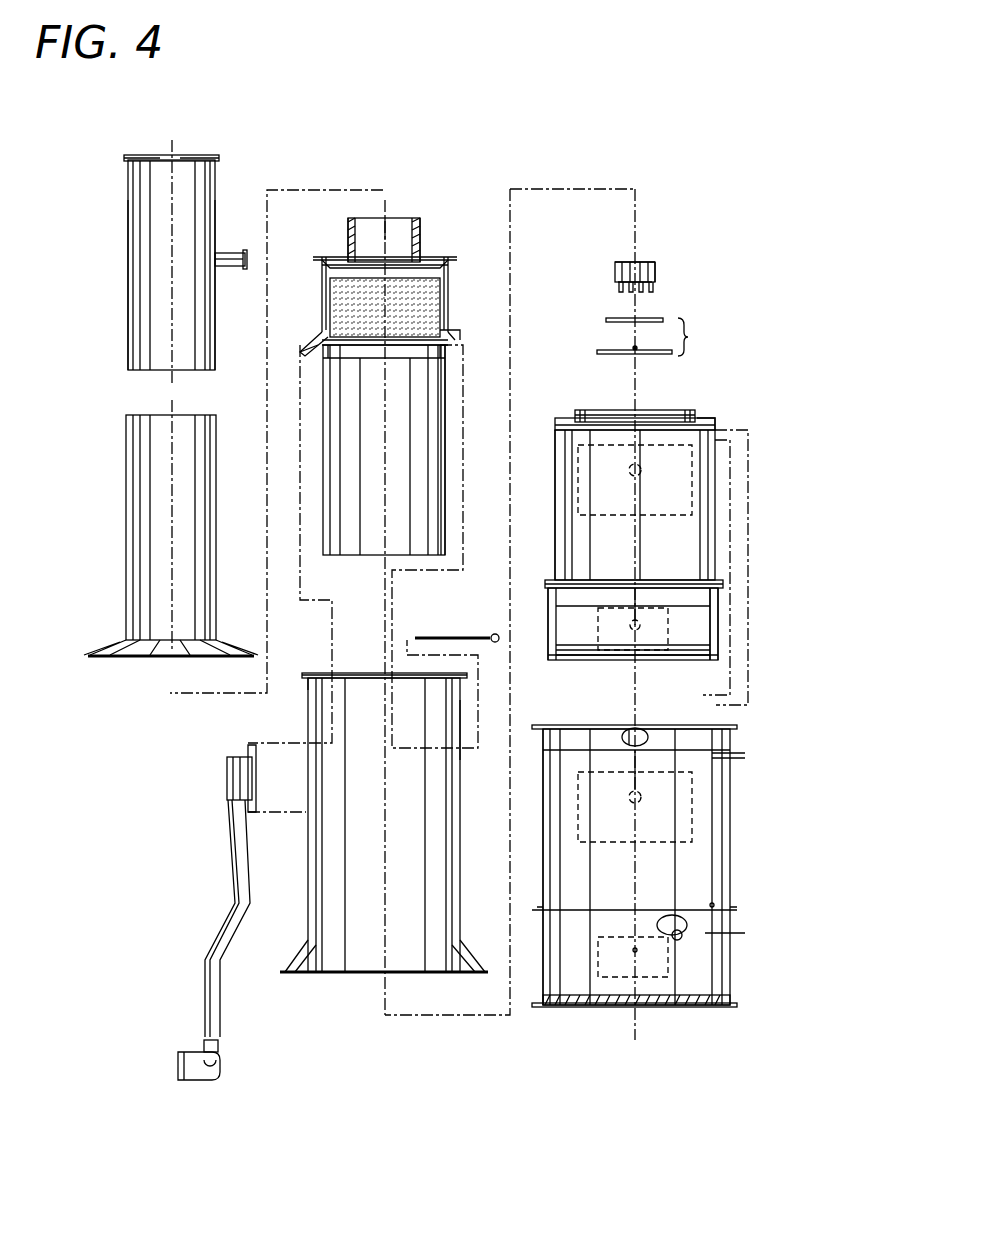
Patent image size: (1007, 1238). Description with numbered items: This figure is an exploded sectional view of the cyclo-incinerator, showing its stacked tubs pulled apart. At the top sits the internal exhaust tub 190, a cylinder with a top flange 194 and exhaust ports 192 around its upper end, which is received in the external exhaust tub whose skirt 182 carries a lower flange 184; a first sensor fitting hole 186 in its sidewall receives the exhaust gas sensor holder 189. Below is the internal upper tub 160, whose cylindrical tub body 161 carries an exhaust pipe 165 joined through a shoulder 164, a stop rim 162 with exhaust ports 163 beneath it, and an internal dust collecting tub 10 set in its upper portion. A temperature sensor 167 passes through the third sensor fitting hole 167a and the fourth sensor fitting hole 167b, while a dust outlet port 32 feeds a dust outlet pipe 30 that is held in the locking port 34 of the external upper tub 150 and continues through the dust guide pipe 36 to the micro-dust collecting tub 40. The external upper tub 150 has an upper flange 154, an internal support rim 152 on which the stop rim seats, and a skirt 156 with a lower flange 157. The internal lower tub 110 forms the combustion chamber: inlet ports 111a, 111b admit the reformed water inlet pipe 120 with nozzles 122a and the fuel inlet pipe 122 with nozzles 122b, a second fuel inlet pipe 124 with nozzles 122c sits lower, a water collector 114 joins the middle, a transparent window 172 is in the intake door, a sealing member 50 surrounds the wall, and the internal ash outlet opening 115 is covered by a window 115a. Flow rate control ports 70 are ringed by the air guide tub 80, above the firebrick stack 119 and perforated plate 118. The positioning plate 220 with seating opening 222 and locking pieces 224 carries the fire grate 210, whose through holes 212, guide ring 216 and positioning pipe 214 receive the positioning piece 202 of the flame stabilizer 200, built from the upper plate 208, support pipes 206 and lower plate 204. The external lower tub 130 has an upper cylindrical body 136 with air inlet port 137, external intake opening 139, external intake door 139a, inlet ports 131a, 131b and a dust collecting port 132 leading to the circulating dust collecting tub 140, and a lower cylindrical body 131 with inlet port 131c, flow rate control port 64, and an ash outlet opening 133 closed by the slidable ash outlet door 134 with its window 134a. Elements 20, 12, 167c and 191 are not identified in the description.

The internal exhaust tub 190 is at (128, 205).
The exhaust ports 192 is at (150, 160).
The top flange 194 is at (190, 160).
The exhaust gas sensor holder 189 is at (230, 253).
The first sensor fitting hole 186 is at (210, 262).
The skirt 182 is at (120, 640).
The lower flange 184 is at (95, 652).
The shoulder 164 is at (410, 270).
The exhaust pipe 165 is at (417, 267).
The exhaust ports 163 is at (435, 265).
The stop rim 162 is at (430, 275).
The temperature sensor 167 is at (448, 295).
The fourth sensor fitting hole 167b is at (490, 322).
The filter housing 20 is at (330, 285).
The internal dust collecting tub 10 is at (330, 305).
The dust outlet pipe 30 is at (305, 345).
The dust outlet port 32 is at (322, 352).
The filter bottom 12 is at (395, 312).
The collar 167c is at (430, 345).
The internal upper tub 160 is at (488, 410).
The cylindrical tub body 161 is at (447, 468).
The external upper tub 150 is at (471, 811).
The upper flange 154 is at (310, 673).
The internal support rim 152 is at (375, 673).
The skirt 156 is at (300, 955).
The lower flange 157 is at (290, 975).
The third sensor fitting hole 167a is at (458, 748).
The locking port 34 is at (322, 770).
The dust guide pipe 36 is at (227, 778).
The micro-dust collecting tub 40 is at (180, 1062).
The flame stabilizer 200 is at (612, 263).
The annular upper plate 208 is at (650, 263).
The support pipes 206 is at (655, 275).
The lower plate 204 is at (625, 283).
The positioning piece 202 is at (630, 293).
The guide ring 216 is at (650, 318).
The through holes 212 is at (615, 352).
The positioning pipe 214 is at (633, 347).
The fire grate 210 is at (705, 337).
The internal lower tub 110 is at (716, 505).
The fuel inlet pipe 122 is at (709, 411).
The nozzles 122b is at (610, 420).
The inlet port 111b is at (718, 430).
The inlet port 111a is at (716, 440).
The reformed water inlet pipe 120 is at (705, 440).
The nozzles 122a is at (565, 430).
The transparent window 172 is at (640, 465).
The window 191 is at (630, 507).
The band-shaped sealing member 50 is at (553, 585).
The water collector 114 is at (600, 580).
The nozzles 122c is at (628, 600).
The window 115a is at (630, 622).
The air guide tub 80 is at (552, 640).
The seating opening 222 is at (565, 628).
The positioning plate 220 is at (570, 655).
The fuel inlet pipe 124 is at (700, 608).
The internal ash outlet opening 115 is at (672, 628).
The locking pieces 224 is at (608, 653).
The perforated plate 118 is at (642, 658).
The firebrick stack 119 is at (645, 665).
The flow rate control ports 70 is at (690, 657).
The external lower tub 130 is at (733, 850).
The air inlet port 137 is at (625, 732).
The external intake door 139a is at (632, 790).
The external intake opening 139 is at (655, 838).
The circulating dust collecting tub 140 is at (618, 835).
The inlet port 131b is at (735, 753).
The inlet port 131a is at (735, 755).
The upper cylindrical body 136 is at (552, 865).
The dust collecting port 132 is at (713, 905).
The lower cylindrical body 131 is at (549, 940).
The ash outlet opening 133 is at (625, 945).
The window 134a is at (633, 950).
The flow rate control port 64 is at (672, 930).
The inlet port 131c is at (735, 933).
The slidable ash outlet door 134 is at (620, 975).